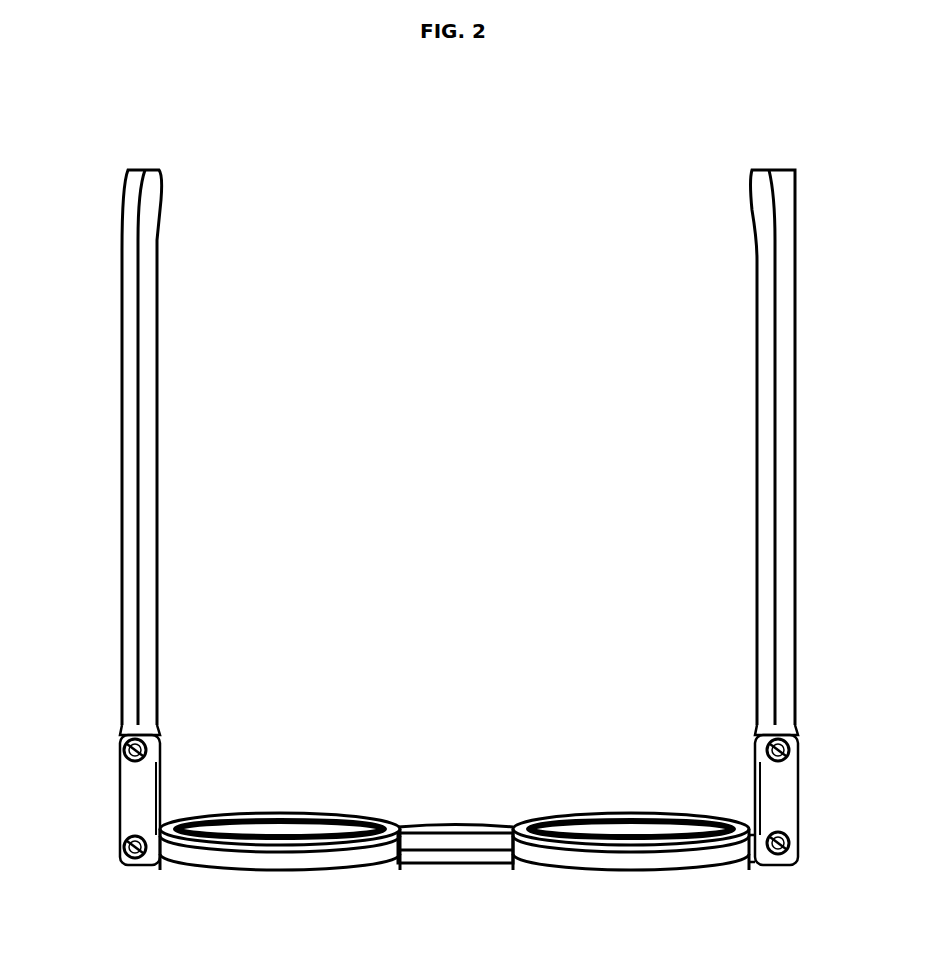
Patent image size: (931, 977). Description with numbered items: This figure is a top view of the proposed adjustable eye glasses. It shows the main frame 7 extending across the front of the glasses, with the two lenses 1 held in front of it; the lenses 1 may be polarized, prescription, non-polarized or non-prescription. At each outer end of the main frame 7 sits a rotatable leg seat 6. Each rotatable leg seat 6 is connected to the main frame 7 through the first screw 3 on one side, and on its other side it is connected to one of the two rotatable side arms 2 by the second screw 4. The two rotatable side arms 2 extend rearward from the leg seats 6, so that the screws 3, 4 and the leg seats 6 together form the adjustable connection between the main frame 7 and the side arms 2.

The lenses 1 is at (608, 826).
The rotatable side arms 2 is at (130, 406).
The first screw 3 is at (800, 843).
The second screw 4 is at (124, 746).
The rotatable leg seats 6 is at (136, 800).
The main frame 7 is at (447, 858).